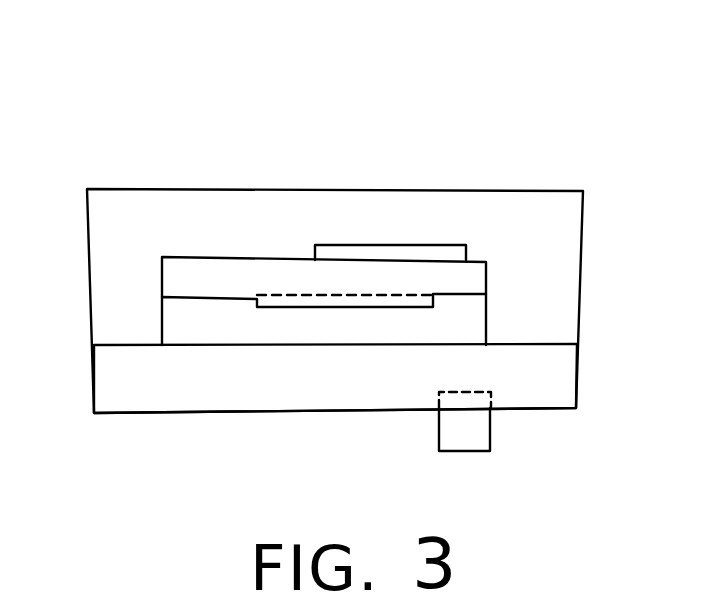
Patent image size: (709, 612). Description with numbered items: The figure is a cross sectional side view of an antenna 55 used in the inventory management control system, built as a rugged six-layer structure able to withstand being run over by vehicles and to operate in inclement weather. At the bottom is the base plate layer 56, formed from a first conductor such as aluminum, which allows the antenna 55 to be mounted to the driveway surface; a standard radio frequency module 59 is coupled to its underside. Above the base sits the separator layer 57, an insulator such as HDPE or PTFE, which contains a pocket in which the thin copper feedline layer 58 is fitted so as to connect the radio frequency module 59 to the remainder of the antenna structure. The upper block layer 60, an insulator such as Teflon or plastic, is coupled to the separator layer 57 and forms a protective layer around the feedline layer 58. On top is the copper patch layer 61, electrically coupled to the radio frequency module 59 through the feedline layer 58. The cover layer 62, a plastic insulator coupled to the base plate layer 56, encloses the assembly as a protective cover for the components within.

The antenna 55 is at (82, 113).
The base plate layer 56 is at (578, 375).
The separator layer 57 is at (488, 321).
The feedline layer 58 is at (283, 292).
The radio frequency module 59 is at (458, 454).
The upper block layer 60 is at (488, 271).
The patch layer 61 is at (405, 244).
The cover layer 62 is at (518, 189).